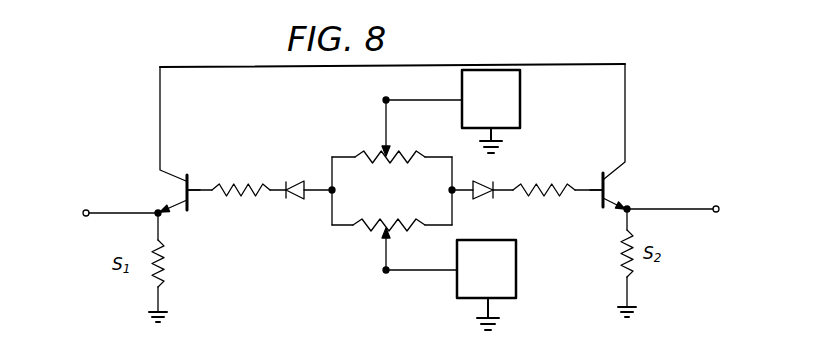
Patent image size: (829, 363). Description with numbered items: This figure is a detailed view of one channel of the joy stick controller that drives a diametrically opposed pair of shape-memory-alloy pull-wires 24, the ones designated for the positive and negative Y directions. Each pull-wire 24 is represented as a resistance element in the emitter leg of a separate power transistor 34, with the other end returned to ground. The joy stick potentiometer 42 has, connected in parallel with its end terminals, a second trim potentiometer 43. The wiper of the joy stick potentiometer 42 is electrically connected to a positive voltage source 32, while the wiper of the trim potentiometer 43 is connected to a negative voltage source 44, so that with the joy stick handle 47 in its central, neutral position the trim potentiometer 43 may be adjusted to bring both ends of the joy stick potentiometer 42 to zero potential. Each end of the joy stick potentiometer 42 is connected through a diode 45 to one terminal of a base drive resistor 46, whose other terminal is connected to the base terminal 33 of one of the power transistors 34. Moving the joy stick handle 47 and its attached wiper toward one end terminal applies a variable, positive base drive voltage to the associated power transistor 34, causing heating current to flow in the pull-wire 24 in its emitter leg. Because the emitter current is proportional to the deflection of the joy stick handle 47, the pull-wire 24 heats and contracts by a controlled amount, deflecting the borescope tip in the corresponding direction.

The SME alloy actuator pull-wire 24 is at (165, 256).
The positive voltage source 32 is at (520, 103).
The base terminal 33 is at (197, 192).
The power transistor 34 is at (190, 160).
The joy stick potentiometer 42 is at (370, 152).
The trim potentiometer 43 is at (371, 229).
The negative voltage source 44 is at (516, 278).
The diode 45 is at (296, 200).
The base drive resistor 46 is at (241, 185).
The joy stick handle 47 is at (391, 189).